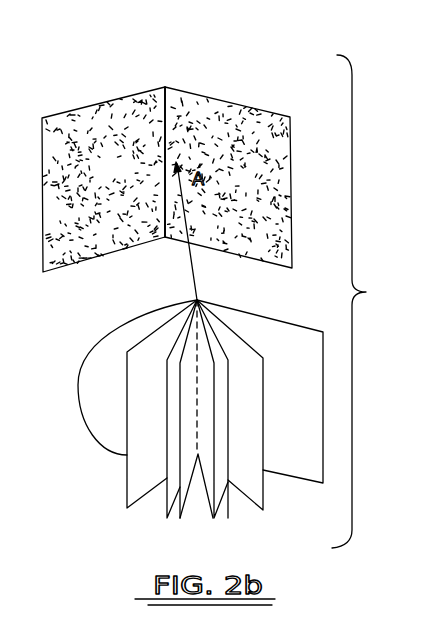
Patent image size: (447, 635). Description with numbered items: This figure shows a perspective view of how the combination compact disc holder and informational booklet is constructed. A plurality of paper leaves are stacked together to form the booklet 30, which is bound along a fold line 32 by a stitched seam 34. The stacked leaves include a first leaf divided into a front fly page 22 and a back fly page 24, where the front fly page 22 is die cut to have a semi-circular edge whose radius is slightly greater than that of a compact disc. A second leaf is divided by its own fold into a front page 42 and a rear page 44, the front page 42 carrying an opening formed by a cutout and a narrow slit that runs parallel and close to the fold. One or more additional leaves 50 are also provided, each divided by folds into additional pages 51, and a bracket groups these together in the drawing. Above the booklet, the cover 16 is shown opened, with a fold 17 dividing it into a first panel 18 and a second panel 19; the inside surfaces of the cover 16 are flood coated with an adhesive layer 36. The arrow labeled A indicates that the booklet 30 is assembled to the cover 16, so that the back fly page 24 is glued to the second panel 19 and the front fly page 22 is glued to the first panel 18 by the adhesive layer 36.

The cover 16 is at (205, 61).
The fold 17 is at (165, 86).
The first panel 18 is at (88, 104).
The second panel 19 is at (258, 107).
The adhesive layer 36 is at (256, 173).
The front fly page 22 is at (97, 336).
The back fly page 24 is at (297, 330).
The booklet 30 is at (138, 514).
The fold line 32 is at (185, 292).
The stitched seam 34 is at (203, 365).
The front page 42 is at (127, 478).
The rear page 44 is at (262, 483).
The additional leaves 50 is at (158, 522).
The additional pages 51 is at (197, 409).